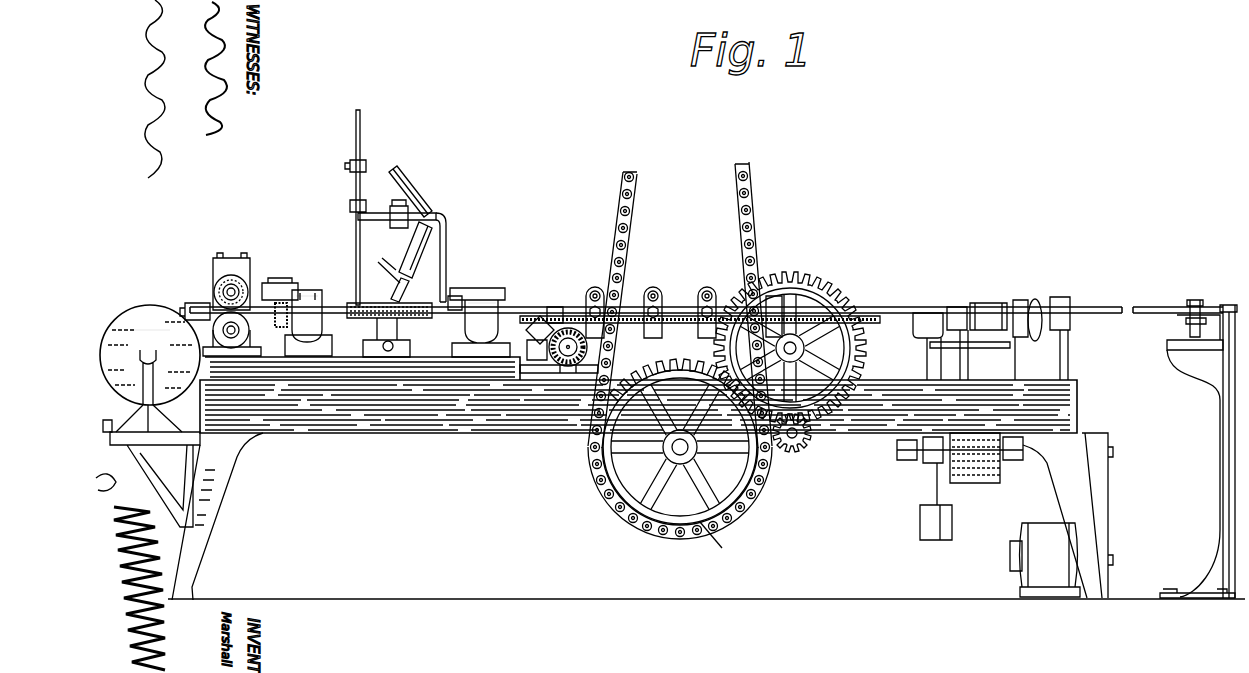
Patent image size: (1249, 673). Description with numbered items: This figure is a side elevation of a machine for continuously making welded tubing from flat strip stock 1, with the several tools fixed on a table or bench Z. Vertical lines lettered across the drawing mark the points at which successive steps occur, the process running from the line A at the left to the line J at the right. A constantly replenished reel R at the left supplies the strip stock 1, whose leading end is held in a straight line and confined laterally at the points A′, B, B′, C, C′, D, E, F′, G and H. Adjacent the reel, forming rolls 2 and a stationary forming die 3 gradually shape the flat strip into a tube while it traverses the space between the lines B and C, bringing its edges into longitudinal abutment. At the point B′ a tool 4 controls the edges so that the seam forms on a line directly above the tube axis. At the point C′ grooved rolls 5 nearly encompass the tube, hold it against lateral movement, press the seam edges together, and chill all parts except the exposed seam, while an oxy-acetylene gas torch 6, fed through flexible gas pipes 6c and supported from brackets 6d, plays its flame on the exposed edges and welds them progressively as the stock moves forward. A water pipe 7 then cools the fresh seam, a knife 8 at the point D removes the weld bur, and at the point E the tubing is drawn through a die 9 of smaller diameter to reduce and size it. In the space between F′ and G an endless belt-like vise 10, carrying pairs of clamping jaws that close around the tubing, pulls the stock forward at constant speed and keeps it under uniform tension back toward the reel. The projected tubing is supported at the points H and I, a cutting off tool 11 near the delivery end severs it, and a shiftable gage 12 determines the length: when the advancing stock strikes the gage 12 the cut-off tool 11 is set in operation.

The line A is at (137, 302).
The confinement point A′ is at (188, 303).
The line B is at (228, 252).
The seam-positioning point B′ is at (281, 280).
The line C is at (318, 280).
The welding point C′ is at (390, 207).
The bur-removal point D is at (455, 290).
The reducing point E is at (488, 282).
The confinement point F′ is at (542, 297).
The line G is at (822, 277).
The support point H is at (1032, 360).
The support point I is at (1187, 298).
The line J is at (1207, 300).
The reel R is at (150, 338).
The table or bench Z is at (526, 435).
The flat strip stock 1 is at (897, 307).
The forming rolls 2 is at (218, 290).
The forming die 3 is at (306, 312).
The seam positioning tool 4 is at (282, 320).
The holding, pressing and chilling rolls 5 is at (366, 318).
The oxy-acetylene gas torch 6 is at (404, 248).
The flexible gas pipes 6c is at (410, 183).
The brackets 6d is at (405, 286).
The water nozzle or pipe 7 is at (447, 258).
The bur-removing knife 8 is at (452, 302).
The reducing die 9 is at (482, 312).
The endless belt-like vise 10 is at (680, 303).
The cutting off tool 11 is at (1040, 300).
The gage 12 is at (1192, 322).